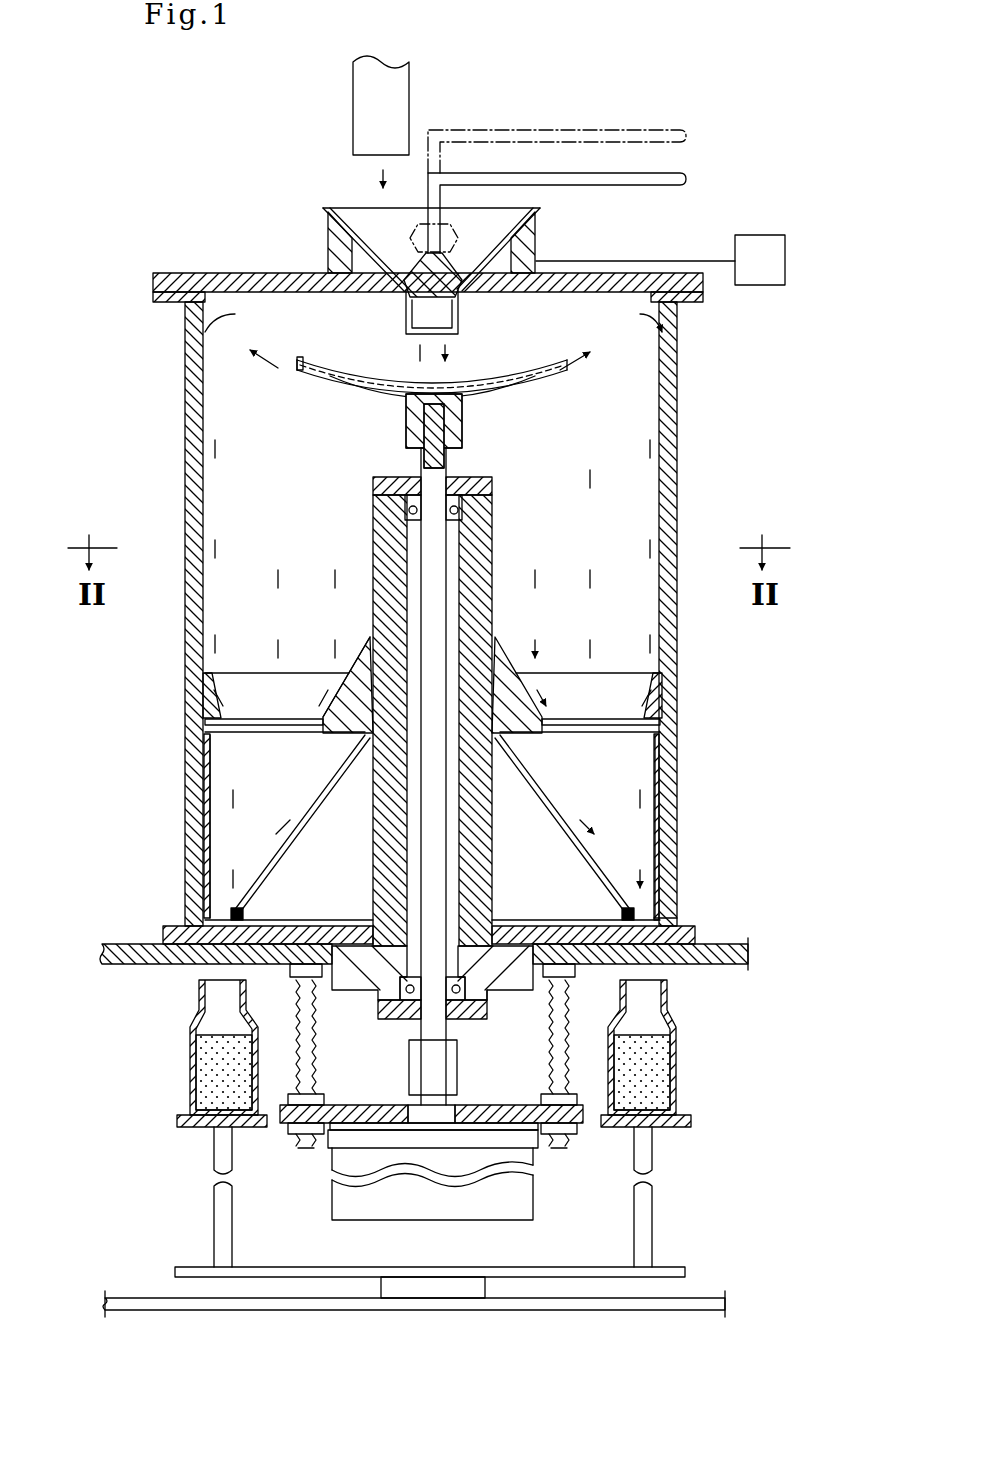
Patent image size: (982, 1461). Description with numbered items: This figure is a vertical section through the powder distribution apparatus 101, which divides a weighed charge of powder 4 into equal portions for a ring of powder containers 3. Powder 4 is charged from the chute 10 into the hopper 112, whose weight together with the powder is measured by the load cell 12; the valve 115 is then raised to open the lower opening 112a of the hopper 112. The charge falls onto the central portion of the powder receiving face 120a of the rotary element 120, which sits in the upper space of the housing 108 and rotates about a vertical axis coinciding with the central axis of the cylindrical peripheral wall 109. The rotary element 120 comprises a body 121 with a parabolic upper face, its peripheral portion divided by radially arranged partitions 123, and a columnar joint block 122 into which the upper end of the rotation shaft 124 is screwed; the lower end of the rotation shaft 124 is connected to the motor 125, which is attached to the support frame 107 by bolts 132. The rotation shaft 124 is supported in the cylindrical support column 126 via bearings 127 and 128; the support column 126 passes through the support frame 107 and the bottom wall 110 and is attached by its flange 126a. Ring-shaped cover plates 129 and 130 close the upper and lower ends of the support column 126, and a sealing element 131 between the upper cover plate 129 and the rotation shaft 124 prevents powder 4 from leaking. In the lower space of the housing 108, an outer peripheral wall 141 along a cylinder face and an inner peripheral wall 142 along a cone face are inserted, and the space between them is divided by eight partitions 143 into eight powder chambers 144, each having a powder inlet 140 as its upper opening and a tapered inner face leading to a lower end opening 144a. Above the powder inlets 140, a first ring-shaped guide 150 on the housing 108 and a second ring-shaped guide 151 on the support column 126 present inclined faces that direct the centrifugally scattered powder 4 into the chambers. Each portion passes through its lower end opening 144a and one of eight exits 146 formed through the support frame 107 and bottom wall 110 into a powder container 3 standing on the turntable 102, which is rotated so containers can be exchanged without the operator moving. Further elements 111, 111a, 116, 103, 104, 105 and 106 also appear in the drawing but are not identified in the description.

The chute 10 is at (409, 95).
The load cell 12 is at (536, 245).
The hopper 112 is at (360, 208).
The valve 115 is at (640, 185).
The gas supply source 116 is at (762, 245).
The powder distribution apparatus 101 is at (190, 272).
The lid plate 111 is at (262, 273).
The cup portion 111a is at (462, 300).
The lower opening 112a is at (450, 318).
The rotary element 120 is at (449, 378).
The powder receiving face 120a is at (385, 360).
The body 121 is at (330, 378).
The joint block 122 is at (455, 410).
The partitions 123 is at (297, 356).
The rotation shaft 124 is at (446, 470).
The motor 125 is at (338, 1160).
The support column 126 is at (492, 632).
The flange 126a is at (520, 980).
The bearing 127 is at (492, 548).
The bearing 128 is at (446, 1030).
The cover plate 129 is at (462, 505).
The cover plate 130 is at (392, 1022).
The sealing element 131 is at (418, 467).
The bolts 132 is at (316, 1010).
The powder inlets 140 is at (258, 727).
The outer peripheral wall 141 is at (205, 784).
The inner peripheral wall 142 is at (314, 810).
The partitions 143 is at (232, 848).
The powder chambers 144 is at (374, 826).
The lower end opening 144a is at (243, 912).
The exits 146 is at (185, 958).
The first ring-shaped guide 150 is at (205, 708).
The second ring-shaped guide 151 is at (362, 662).
The support frame 107 is at (712, 955).
The housing 108 is at (674, 788).
The cylindrical peripheral wall 109 is at (674, 745).
The bottom wall 110 is at (676, 906).
The turntable 102 is at (176, 1128).
The right bottle support plate 106 is at (692, 1126).
The support leg 105 is at (652, 1200).
The lower base plate 104 is at (665, 1267).
The bottom plate 103 is at (150, 1296).
The powder containers 3 is at (192, 1045).
The powder 4 is at (212, 1090).